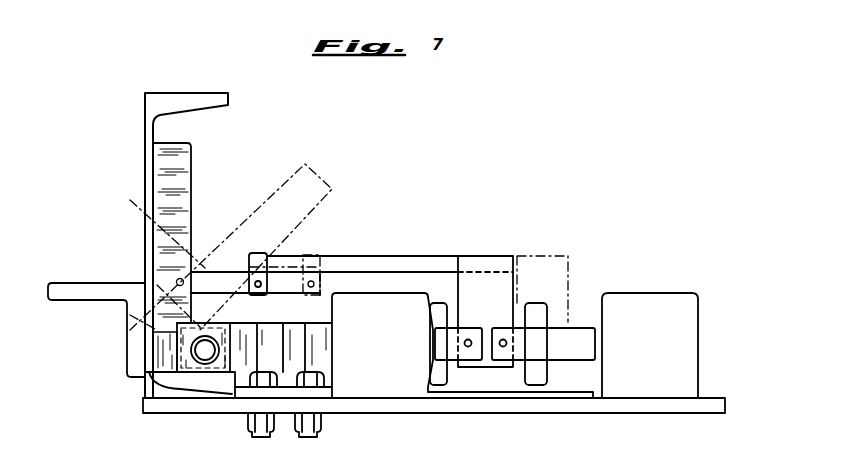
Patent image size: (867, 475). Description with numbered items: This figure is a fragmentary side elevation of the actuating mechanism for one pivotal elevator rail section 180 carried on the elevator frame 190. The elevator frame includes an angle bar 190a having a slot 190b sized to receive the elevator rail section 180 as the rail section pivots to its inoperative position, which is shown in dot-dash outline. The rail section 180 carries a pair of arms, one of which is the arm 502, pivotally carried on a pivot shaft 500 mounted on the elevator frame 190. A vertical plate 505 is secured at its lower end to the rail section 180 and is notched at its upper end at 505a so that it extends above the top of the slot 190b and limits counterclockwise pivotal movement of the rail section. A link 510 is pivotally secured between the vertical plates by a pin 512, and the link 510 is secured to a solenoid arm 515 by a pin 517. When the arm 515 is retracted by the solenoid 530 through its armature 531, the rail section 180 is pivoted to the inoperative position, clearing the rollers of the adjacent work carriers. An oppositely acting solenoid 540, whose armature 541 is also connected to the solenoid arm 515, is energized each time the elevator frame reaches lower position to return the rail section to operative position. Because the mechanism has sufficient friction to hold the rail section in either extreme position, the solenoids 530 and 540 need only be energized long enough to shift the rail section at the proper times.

The elevator frame 190 is at (182, 95).
The angle bar 190a is at (145, 143).
The slot 190b is at (152, 183).
The elevator rail section 180 is at (133, 217).
The vertical plate 505 is at (187, 157).
The notch 505a is at (277, 192).
The pin 512 is at (176, 281).
The link 510 is at (221, 293).
The pin 517 is at (262, 283).
The solenoid arm 515 is at (365, 256).
The arm 502 is at (158, 348).
The pivot shaft 500 is at (205, 350).
The solenoid 540 is at (385, 388).
The armature 541 is at (452, 350).
The armature 531 is at (572, 333).
The solenoid 530 is at (640, 302).